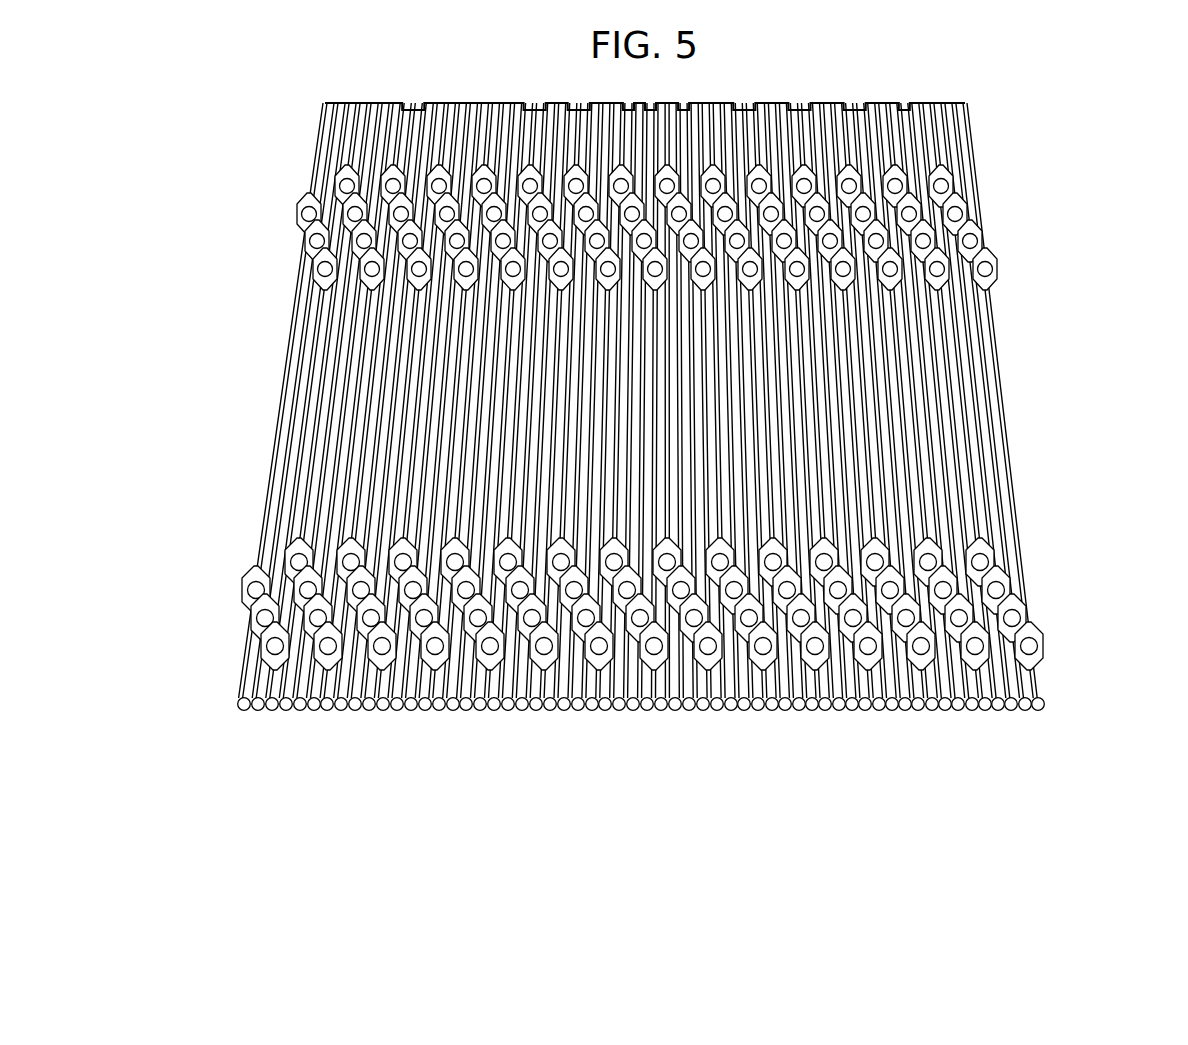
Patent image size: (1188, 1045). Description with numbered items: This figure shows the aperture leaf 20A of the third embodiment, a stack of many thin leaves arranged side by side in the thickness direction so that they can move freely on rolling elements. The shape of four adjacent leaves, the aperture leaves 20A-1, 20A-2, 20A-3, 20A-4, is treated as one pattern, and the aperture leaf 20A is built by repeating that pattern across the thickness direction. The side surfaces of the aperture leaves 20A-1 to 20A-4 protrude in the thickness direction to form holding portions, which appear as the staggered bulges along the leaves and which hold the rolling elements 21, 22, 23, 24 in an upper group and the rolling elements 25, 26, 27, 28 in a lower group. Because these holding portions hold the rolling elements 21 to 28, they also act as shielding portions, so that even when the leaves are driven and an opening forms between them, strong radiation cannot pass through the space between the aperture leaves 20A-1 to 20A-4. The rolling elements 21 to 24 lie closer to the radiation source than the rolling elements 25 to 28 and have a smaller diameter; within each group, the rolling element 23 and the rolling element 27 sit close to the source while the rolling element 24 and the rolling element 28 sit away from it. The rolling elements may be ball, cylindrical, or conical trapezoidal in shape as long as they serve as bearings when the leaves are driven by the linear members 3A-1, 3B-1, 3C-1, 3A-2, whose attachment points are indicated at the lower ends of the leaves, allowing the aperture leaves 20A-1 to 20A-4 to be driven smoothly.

The aperture leaf 20A is at (243, 138).
The rolling element 21 is at (946, 190).
The rolling element 22 is at (960, 216).
The rolling element 23 is at (975, 243).
The rolling element 24 is at (989, 270).
The rolling element 25 is at (985, 564).
The rolling element 26 is at (1001, 592).
The rolling element 27 is at (1017, 620).
The rolling element 28 is at (1033, 648).
The aperture leaf 20A-1 is at (1007, 454).
The aperture leaf 20A-2 is at (990, 427).
The aperture leaf 20A-3 is at (973, 400).
The aperture leaf 20A-4 is at (958, 370).
The linear member 3A-1 is at (1040, 710).
The linear member 3A-2 is at (997, 710).
The linear member 3B-1 is at (1026, 710).
The linear member 3C-1 is at (1011, 710).